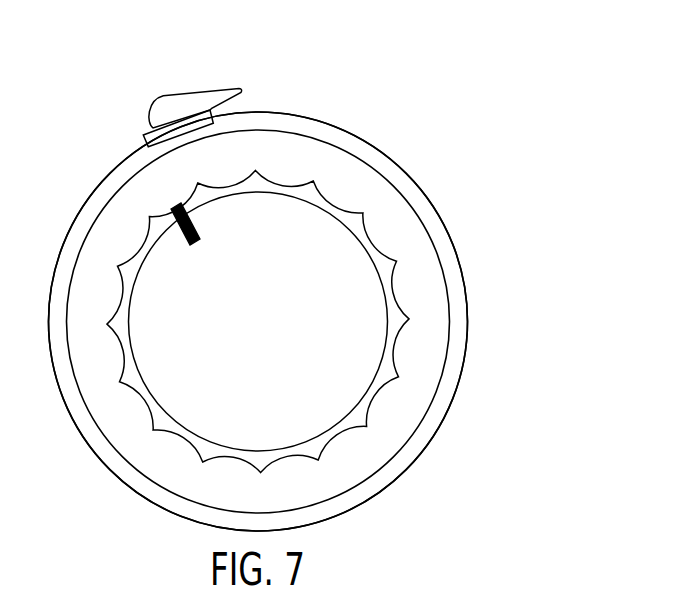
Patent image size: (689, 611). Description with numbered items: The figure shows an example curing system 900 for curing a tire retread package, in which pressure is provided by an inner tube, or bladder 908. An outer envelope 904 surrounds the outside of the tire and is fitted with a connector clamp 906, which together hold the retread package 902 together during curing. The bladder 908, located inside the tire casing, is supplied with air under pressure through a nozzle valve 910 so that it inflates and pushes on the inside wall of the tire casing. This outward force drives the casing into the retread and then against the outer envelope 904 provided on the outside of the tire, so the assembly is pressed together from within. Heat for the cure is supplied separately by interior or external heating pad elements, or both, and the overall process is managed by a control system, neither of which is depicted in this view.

The curing system 900 is at (286, 86).
The retread package 902 is at (432, 235).
The outer envelope 904 is at (340, 128).
The connector clamp 906 is at (183, 94).
The bladder 908 is at (350, 443).
The nozzle valve 910 is at (200, 240).